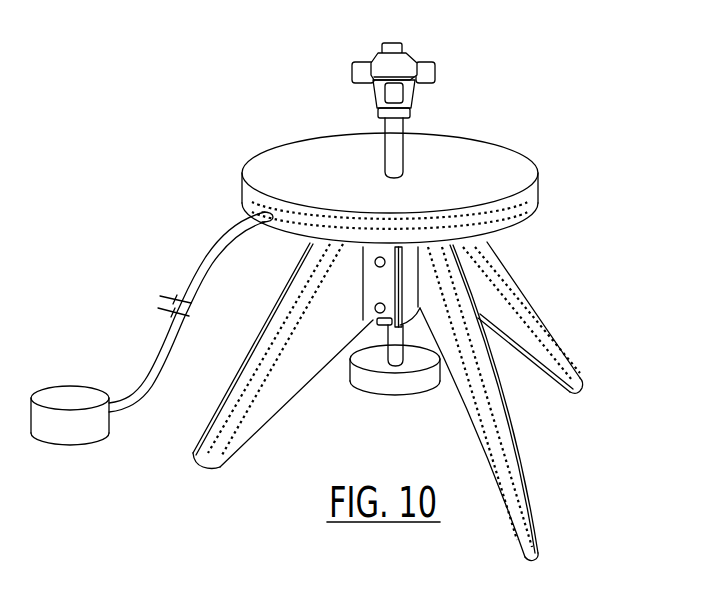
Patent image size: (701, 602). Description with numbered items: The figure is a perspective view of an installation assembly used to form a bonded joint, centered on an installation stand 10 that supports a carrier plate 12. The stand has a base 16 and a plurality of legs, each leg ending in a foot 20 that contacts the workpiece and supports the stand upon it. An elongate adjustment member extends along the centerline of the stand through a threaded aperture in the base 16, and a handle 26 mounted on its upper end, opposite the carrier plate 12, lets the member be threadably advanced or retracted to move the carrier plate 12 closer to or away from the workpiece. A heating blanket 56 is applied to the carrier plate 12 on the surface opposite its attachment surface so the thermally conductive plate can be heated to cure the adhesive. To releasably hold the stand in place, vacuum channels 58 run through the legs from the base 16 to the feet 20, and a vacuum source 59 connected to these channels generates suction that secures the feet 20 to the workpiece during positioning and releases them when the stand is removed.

The installation stand 10 is at (382, 309).
The carrier plate 12 is at (362, 385).
The base 16 is at (455, 160).
The foot 20 is at (205, 470).
The handle 26 is at (400, 62).
The heating blanket 56 is at (367, 358).
The vacuum channels 58 is at (313, 277).
The vacuum source 59 is at (72, 398).